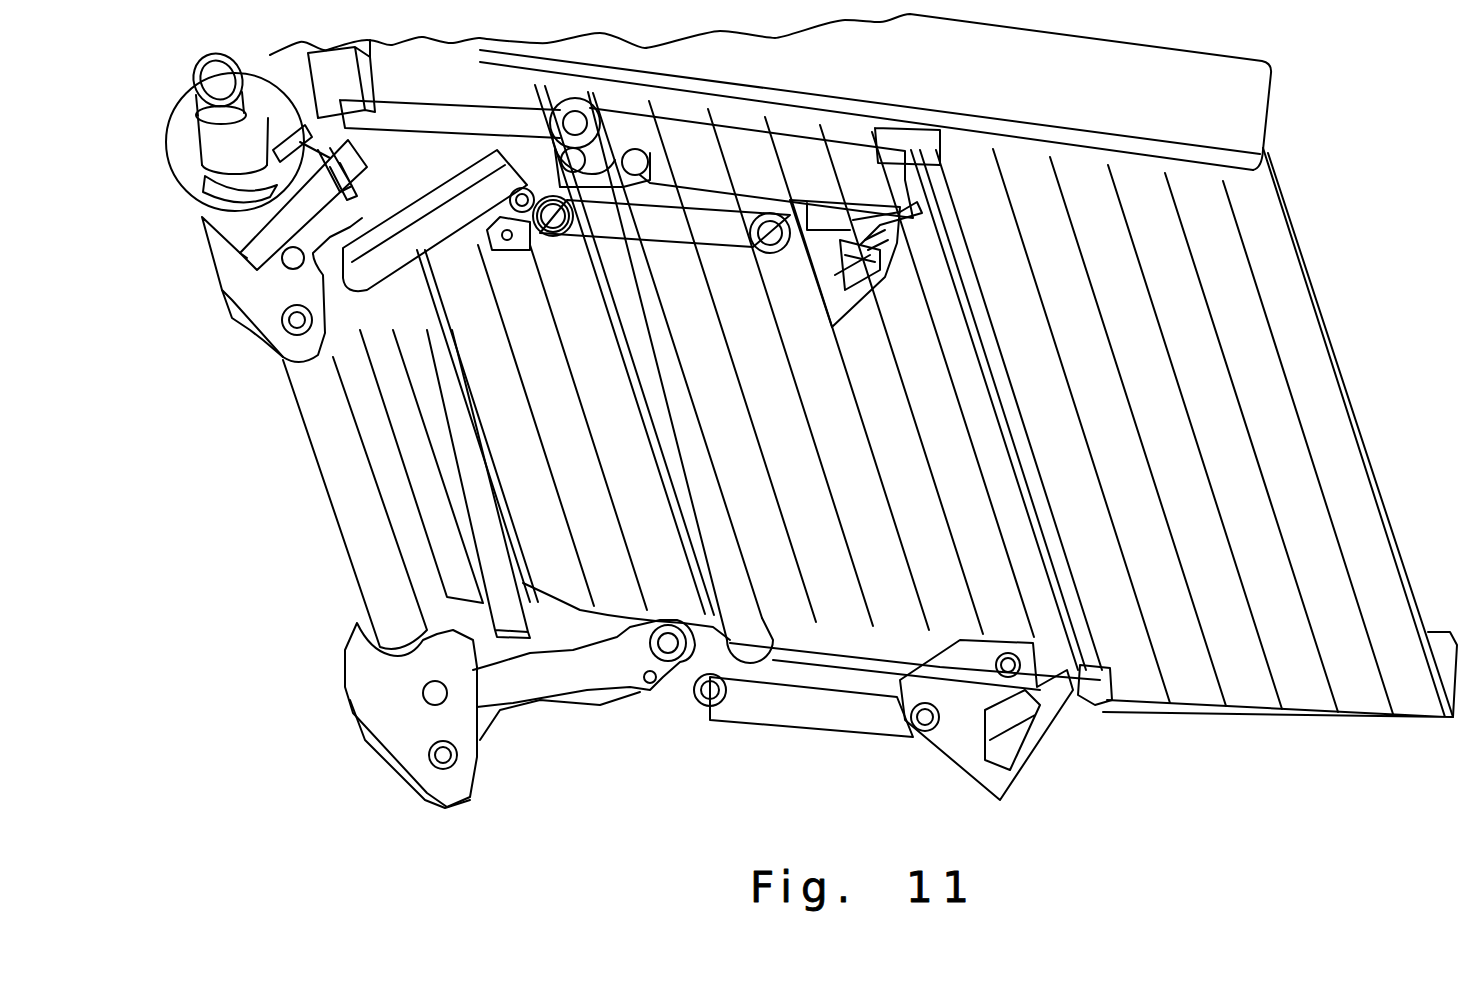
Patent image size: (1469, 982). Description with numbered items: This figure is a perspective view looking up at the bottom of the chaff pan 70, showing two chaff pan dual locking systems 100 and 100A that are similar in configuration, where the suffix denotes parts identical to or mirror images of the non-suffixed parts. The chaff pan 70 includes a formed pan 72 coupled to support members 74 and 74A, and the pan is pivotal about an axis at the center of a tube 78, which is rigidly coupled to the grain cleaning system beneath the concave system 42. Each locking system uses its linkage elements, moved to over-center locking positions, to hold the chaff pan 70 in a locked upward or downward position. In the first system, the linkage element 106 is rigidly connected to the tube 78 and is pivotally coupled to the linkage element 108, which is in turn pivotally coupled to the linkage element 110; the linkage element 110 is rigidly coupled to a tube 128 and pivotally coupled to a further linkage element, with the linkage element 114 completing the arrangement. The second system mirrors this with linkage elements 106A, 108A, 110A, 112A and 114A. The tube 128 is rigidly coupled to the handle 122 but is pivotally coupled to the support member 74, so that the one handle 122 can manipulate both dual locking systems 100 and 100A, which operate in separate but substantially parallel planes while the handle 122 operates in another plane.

The chaff pan 70 is at (1368, 162).
The formed pan 72 is at (1340, 375).
The support member 74 is at (935, 195).
The support member 74A is at (1095, 725).
The tube 78 is at (208, 55).
The chaff pan dual locking system 100 is at (240, 380).
The chaff pan dual locking system 100A is at (718, 752).
The linkage element 106 is at (216, 262).
The linkage element 106A is at (350, 666).
The linkage element 108 is at (455, 250).
The linkage element 108A is at (563, 700).
The linkage element 110 is at (525, 250).
The linkage element 110A is at (632, 700).
The linkage element 112A is at (800, 720).
The linkage element 114 is at (800, 318).
The linkage element 114A is at (958, 792).
The handle 122 is at (530, 145).
The tube 128 is at (708, 548).
The concave system 42 is at (660, 250).